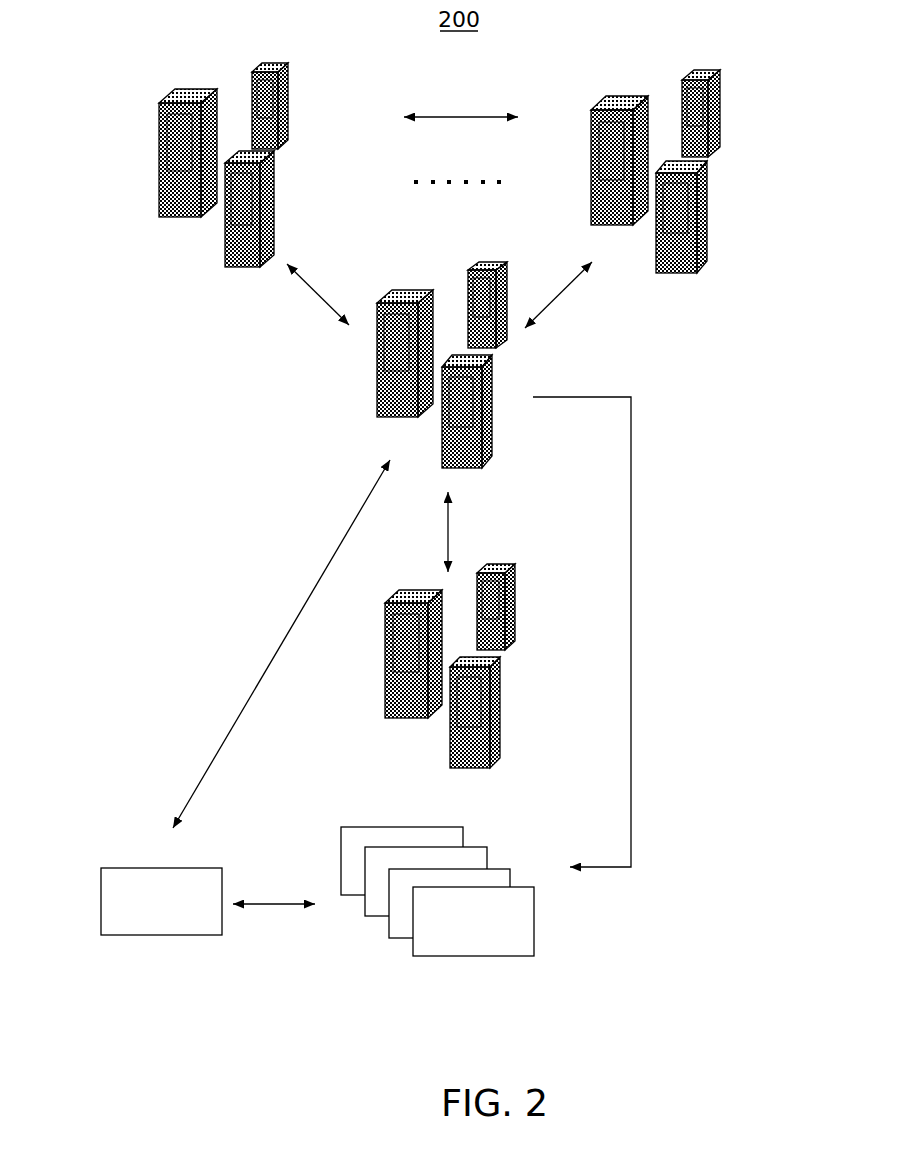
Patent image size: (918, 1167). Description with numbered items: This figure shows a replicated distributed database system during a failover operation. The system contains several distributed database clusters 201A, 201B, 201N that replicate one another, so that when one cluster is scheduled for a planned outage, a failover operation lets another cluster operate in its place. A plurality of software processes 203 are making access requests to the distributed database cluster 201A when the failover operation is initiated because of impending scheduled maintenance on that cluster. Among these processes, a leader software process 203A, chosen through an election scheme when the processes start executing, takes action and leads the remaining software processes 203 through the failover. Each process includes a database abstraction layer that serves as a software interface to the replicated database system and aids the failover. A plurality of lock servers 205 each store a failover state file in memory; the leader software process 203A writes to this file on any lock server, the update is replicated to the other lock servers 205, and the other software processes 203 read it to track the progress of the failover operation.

The distributed database cluster 201A is at (357, 618).
The distributed database cluster 201B is at (307, 127).
The distributed database cluster 201N is at (740, 127).
The lock servers 205 is at (370, 378).
The software processes 203 is at (562, 938).
The leader software process 203A is at (90, 916).